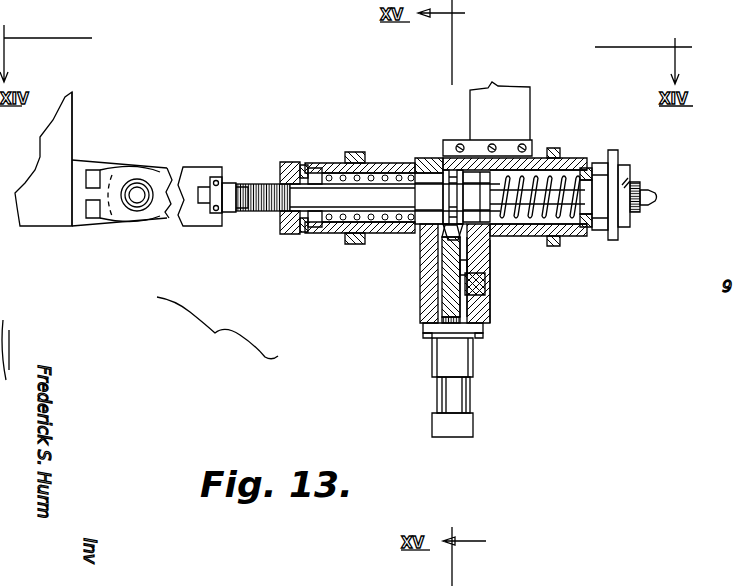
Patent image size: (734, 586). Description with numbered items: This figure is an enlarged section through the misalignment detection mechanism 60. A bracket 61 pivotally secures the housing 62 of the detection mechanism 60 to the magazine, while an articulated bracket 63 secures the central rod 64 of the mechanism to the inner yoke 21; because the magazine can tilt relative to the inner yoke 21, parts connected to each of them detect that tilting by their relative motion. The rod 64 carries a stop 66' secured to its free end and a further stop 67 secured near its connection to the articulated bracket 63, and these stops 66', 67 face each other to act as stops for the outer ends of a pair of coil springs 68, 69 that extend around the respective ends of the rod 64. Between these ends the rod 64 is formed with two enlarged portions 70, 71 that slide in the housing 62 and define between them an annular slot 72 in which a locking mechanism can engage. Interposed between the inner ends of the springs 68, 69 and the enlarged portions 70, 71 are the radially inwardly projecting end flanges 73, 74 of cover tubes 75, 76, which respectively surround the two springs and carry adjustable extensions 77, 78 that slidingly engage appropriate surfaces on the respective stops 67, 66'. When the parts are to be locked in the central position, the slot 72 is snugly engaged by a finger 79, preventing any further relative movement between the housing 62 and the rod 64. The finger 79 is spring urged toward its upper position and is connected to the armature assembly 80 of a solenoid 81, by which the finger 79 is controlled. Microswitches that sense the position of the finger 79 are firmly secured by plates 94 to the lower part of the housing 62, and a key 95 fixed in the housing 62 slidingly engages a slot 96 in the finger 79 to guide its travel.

The inner yoke 21 is at (58, 137).
The detection mechanism 60 is at (217, 329).
The bracket 61 is at (525, 98).
The housing 62 is at (428, 156).
The articulated bracket 63 is at (163, 168).
The central rod 64 is at (378, 200).
The stop 66' is at (657, 174).
The stop 67 is at (293, 234).
The coil spring 68 is at (344, 230).
The coil spring 69 is at (585, 236).
The enlarged portion 70 is at (430, 208).
The enlarged portion 71 is at (476, 215).
The annular slot 72 is at (445, 172).
The end flange 73 is at (401, 164).
The end flange 74 is at (495, 178).
The cover tube 75 is at (373, 162).
The cover tube 76 is at (558, 157).
The adjustable extension 77 is at (318, 160).
The adjustable extension 78 is at (595, 160).
The finger 79 is at (450, 288).
The armature assembly 80 is at (462, 402).
The solenoid 81 is at (462, 358).
The plates 94 is at (490, 300).
The key 95 is at (480, 285).
The slot 96 is at (468, 264).